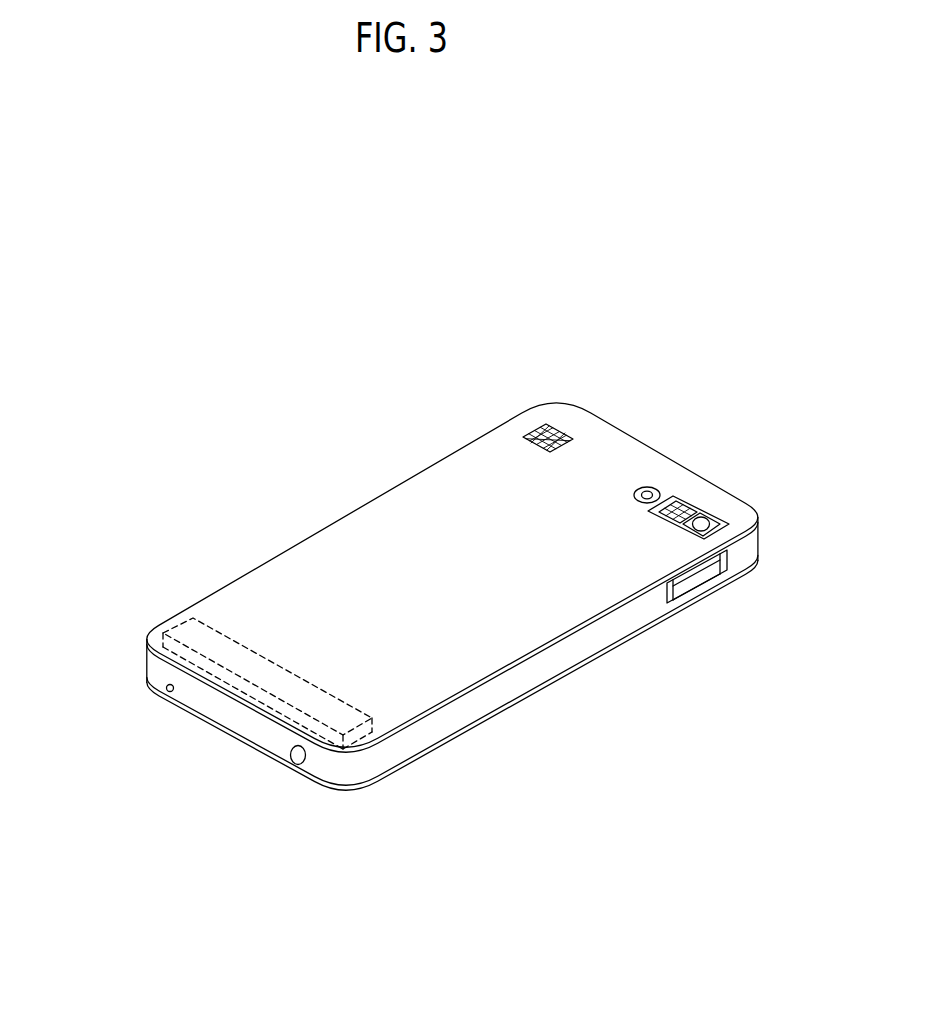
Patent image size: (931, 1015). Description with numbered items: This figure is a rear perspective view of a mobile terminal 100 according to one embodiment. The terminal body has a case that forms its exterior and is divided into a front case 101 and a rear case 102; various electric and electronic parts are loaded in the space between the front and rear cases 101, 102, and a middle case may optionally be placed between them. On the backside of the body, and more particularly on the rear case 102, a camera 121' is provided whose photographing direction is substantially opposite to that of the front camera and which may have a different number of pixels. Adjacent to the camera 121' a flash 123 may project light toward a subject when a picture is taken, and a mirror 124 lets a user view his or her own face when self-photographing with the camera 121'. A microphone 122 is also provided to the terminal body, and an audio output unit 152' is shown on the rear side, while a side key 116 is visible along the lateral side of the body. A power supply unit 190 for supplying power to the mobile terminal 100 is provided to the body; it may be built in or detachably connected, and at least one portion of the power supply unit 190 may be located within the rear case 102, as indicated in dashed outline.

The mobile terminal 100 is at (381, 456).
The front case 101 is at (332, 778).
The rear case 102 is at (363, 758).
The interface / side key 116 is at (294, 764).
The camera 121' is at (661, 448).
The microphone 122 is at (169, 692).
The flash 123 is at (680, 506).
The mirror 124 is at (703, 519).
The rear audio output module (speaker) 152' is at (553, 401).
The power supply unit 190 is at (180, 625).